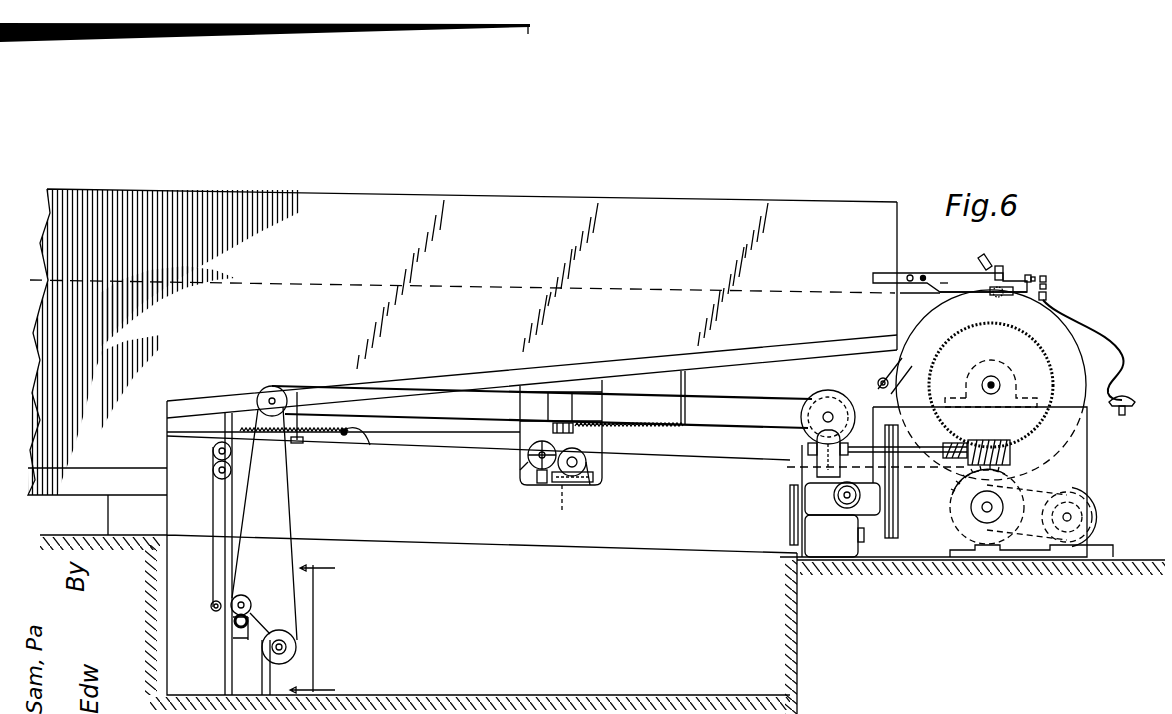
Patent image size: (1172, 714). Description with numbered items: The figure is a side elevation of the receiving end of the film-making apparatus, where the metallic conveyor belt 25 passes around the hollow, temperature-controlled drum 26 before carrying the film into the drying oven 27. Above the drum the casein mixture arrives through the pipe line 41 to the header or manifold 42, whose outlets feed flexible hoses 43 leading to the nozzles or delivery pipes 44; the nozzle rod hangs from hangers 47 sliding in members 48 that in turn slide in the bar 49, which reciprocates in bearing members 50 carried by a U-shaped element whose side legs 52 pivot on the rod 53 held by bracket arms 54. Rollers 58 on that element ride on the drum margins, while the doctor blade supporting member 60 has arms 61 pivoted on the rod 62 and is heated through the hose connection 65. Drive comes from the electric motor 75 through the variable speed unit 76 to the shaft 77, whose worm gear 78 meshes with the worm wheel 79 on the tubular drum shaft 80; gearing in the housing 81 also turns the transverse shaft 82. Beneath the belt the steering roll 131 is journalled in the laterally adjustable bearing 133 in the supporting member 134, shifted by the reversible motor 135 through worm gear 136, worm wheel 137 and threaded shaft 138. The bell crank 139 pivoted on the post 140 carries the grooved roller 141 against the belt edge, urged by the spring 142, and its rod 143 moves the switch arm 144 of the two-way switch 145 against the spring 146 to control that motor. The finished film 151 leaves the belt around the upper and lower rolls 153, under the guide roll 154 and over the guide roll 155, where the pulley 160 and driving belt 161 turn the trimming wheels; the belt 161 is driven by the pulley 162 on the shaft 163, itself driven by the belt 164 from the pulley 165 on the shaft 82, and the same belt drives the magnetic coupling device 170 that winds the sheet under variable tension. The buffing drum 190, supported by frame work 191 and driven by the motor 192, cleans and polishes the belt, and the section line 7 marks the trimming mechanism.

The section line 7- 7 is at (318, 632).
The conveyor belt 25 is at (713, 456).
The drum 26 is at (1062, 342).
The oven 27 is at (322, 192).
The pipe line 41 is at (1126, 414).
The header or manifold 42 is at (1126, 397).
The flexible hose 43 is at (1100, 347).
The nozzle or delivery pipe 44 is at (1046, 297).
The hanger 47 is at (1046, 287).
The member 48 is at (1046, 279).
The bar 49 is at (1036, 279).
The bearing member 50 is at (1031, 276).
The side leg 52 is at (948, 282).
The rod 53 is at (911, 274).
The bracket arm 54 is at (884, 273).
The roller 58 is at (996, 295).
The supporting member 60 is at (1000, 266).
The arm 61 is at (945, 282).
The rod 62 is at (925, 275).
The flexible hose connection 65 is at (984, 256).
The electric motor 75 is at (833, 540).
The variable speed controlling unit 76 is at (872, 545).
The shaft 77 is at (923, 455).
The worm gear 78 is at (1013, 452).
The worm wheel 79 is at (1027, 446).
The tubular shaft 80 is at (992, 376).
The housing 81 is at (815, 440).
The shaft 82 is at (830, 414).
The steering roll 131 is at (590, 462).
The bearing 133 is at (596, 478).
The supporting member 134 is at (590, 486).
The reversible electric motor 135 is at (530, 462).
The worm gear 136 is at (528, 455).
The worm wheel 137 is at (542, 484).
The shaft 138 is at (557, 510).
The bell crank 139 is at (328, 436).
The post 140 is at (352, 438).
The roller 141 is at (298, 443).
The spring 142 is at (299, 428).
The wire or rod 143 is at (447, 433).
The switch arm 144 is at (568, 422).
The two-way switch 145 is at (556, 423).
The spring 146 is at (630, 428).
The film 151 is at (213, 498).
The roll 153 is at (213, 460).
The guide roll 154 is at (214, 611).
The guide roll 155 is at (248, 620).
The pulley 160 is at (246, 598).
The driving belt 161 is at (298, 607).
The pulley 162 is at (262, 390).
The shaft 163 is at (275, 386).
The belt 164 is at (390, 387).
The pulley 165 is at (822, 405).
The magnetic coupling device 170 is at (297, 647).
The buffing wheel or drum 190 is at (952, 520).
The frame work 191 is at (1000, 550).
The electric motor 192 is at (1100, 517).